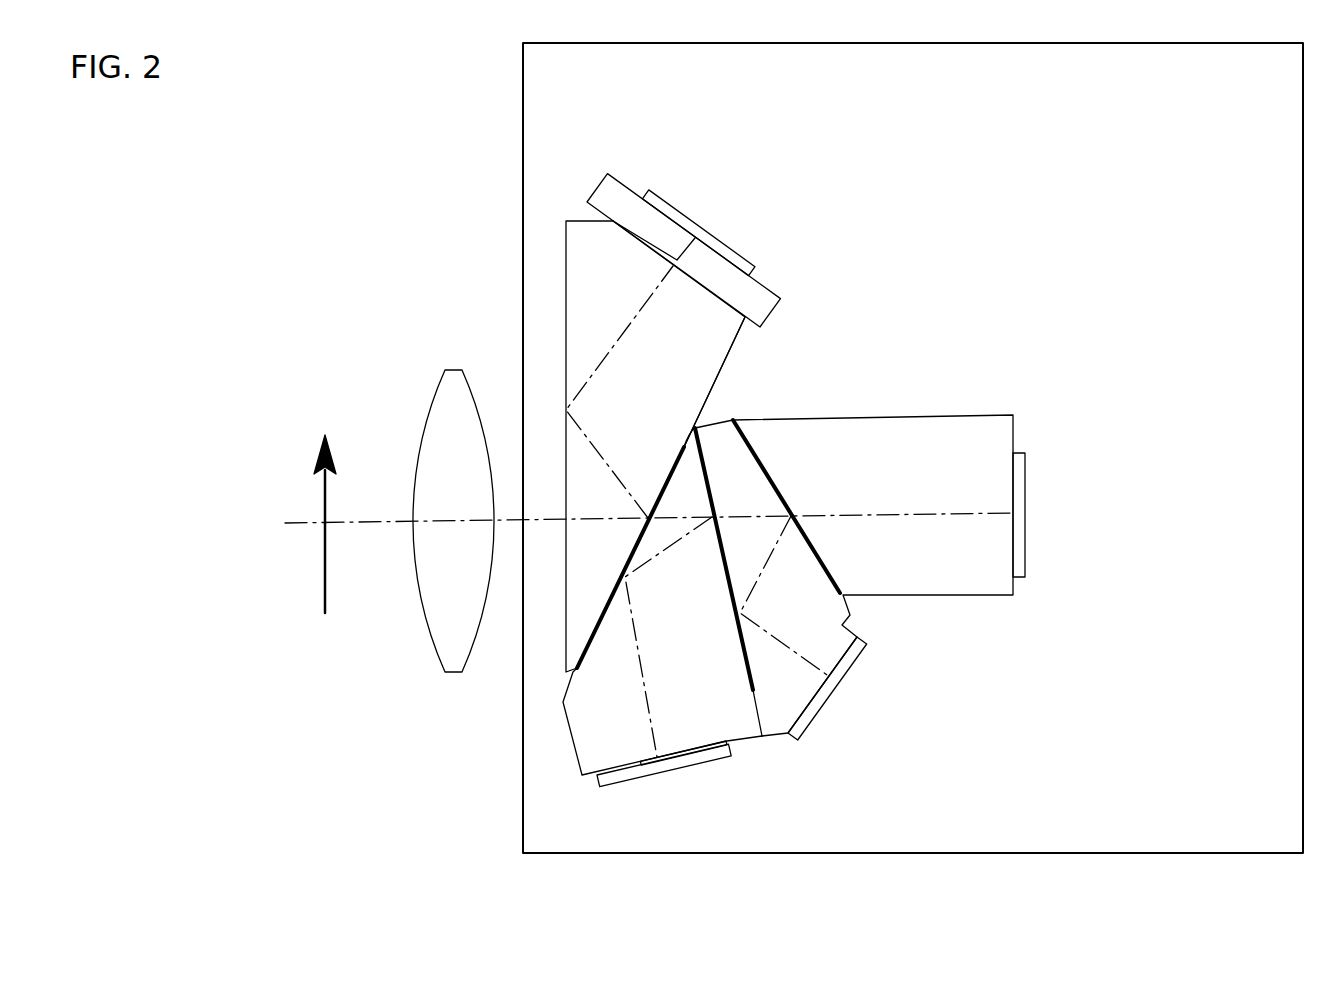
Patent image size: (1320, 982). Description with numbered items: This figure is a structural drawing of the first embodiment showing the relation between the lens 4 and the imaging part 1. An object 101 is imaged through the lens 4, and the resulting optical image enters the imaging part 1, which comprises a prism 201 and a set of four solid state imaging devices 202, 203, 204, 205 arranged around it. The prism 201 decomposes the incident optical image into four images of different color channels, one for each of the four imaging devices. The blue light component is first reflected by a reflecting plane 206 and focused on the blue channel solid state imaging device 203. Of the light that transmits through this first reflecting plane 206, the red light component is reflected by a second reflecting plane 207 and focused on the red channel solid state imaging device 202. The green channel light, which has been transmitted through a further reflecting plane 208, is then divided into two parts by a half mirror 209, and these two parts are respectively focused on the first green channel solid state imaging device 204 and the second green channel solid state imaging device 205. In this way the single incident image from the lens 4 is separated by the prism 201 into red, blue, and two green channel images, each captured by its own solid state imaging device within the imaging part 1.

The imaging part 1 is at (548, 795).
The lens 4 is at (442, 378).
The object 101 is at (322, 440).
The prism 201 is at (565, 296).
The red channel solid state imaging device 202 is at (637, 778).
The blue channel solid state imaging device 203 is at (820, 125).
The first green channel solid state imaging device 204 is at (1027, 500).
The second green channel solid state imaging device 205 is at (833, 692).
The reflecting plane 206 is at (723, 368).
The second reflecting plane 207 is at (758, 706).
The reflecting plane 208 is at (757, 693).
The half mirror 209 is at (767, 472).